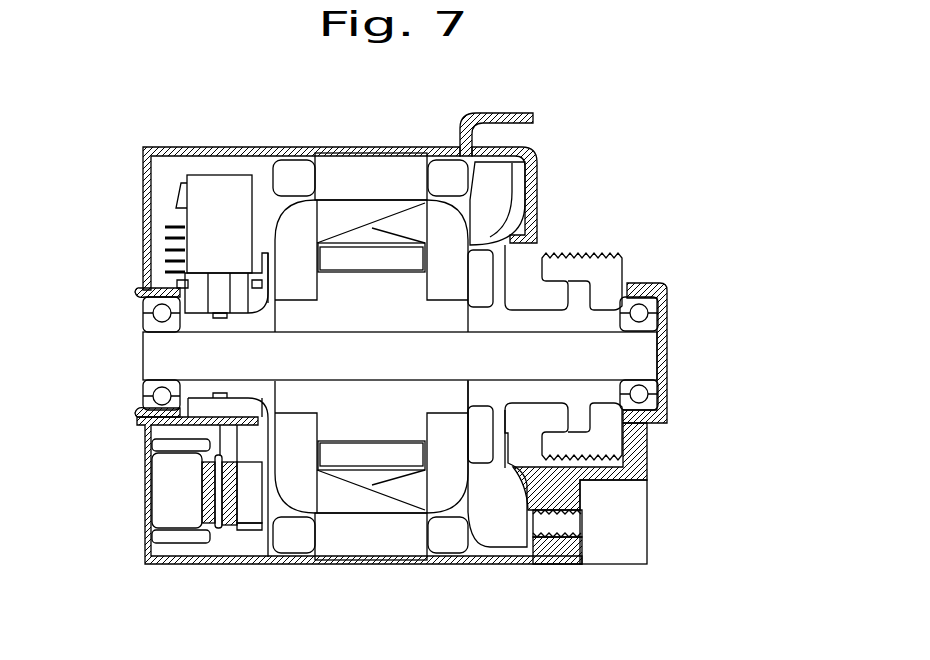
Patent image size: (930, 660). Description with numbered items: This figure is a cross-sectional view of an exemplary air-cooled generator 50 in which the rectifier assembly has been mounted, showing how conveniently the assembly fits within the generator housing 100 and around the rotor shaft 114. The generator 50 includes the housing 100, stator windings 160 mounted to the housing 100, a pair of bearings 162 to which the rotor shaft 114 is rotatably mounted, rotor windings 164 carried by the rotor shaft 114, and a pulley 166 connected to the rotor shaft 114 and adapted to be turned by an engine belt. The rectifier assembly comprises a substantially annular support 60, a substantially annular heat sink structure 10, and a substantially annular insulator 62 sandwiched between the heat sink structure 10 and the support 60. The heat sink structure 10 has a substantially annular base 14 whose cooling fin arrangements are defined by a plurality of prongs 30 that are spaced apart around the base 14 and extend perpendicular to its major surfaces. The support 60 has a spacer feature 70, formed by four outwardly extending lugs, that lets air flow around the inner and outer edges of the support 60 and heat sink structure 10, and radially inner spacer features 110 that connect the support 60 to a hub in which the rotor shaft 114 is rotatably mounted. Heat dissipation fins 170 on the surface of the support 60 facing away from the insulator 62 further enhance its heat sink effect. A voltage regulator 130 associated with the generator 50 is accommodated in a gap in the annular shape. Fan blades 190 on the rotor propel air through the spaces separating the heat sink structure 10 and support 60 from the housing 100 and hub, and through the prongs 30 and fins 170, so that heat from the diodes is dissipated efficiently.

The generator 50 is at (114, 196).
The generator housing 100 is at (282, 150).
The radially inner spacer features 110 is at (158, 426).
The rotor shaft 114 is at (150, 356).
The voltage regulator 130 is at (216, 198).
The stator windings 160 is at (443, 170).
The bearings 162 is at (150, 313).
The rotor windings 164 is at (350, 215).
The pulley 166 is at (618, 256).
The heat dissipation fins 170 is at (250, 535).
The fan blades 190 is at (510, 190).
The heat sink structure 10 is at (181, 524).
The substantially annular base 14 is at (165, 480).
The prongs 30 is at (166, 447).
The substantially annular support 60 is at (255, 520).
The substantially annular insulator 62 is at (202, 558).
The spacer feature 70 is at (232, 548).